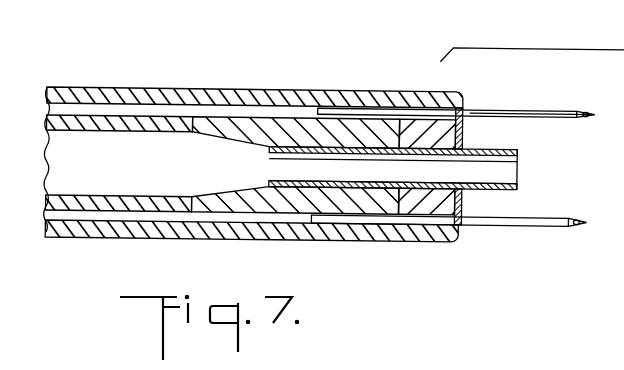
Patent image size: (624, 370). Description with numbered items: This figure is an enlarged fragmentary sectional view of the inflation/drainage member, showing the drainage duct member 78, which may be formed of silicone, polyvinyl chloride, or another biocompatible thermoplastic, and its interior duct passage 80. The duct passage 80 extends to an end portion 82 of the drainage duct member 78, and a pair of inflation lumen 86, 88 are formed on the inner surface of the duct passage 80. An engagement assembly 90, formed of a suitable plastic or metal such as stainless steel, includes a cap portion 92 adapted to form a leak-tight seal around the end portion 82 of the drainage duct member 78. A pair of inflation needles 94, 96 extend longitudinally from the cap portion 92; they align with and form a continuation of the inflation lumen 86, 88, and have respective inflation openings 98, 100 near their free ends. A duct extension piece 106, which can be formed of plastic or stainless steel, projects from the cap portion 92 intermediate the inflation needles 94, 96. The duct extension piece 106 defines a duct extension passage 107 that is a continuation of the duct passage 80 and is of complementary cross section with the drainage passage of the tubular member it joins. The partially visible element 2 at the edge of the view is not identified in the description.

The drainage duct member 78 is at (199, 87).
The inflation lumen 86 is at (110, 106).
The end portion 82 is at (338, 84).
The duct passage 80 is at (107, 177).
The inflation lumen 88 is at (143, 212).
The duct extension piece 106 is at (493, 143).
The duct extension passage 107 is at (507, 166).
The cap portion 92 is at (457, 103).
The inflation needle 94 is at (532, 106).
The inflation opening 98 is at (583, 106).
The inflation needle 96 is at (530, 224).
The inflation opening 100 is at (578, 224).
The engagement assembly 90 is at (433, 245).
The adjacent element 2 is at (531, 112).